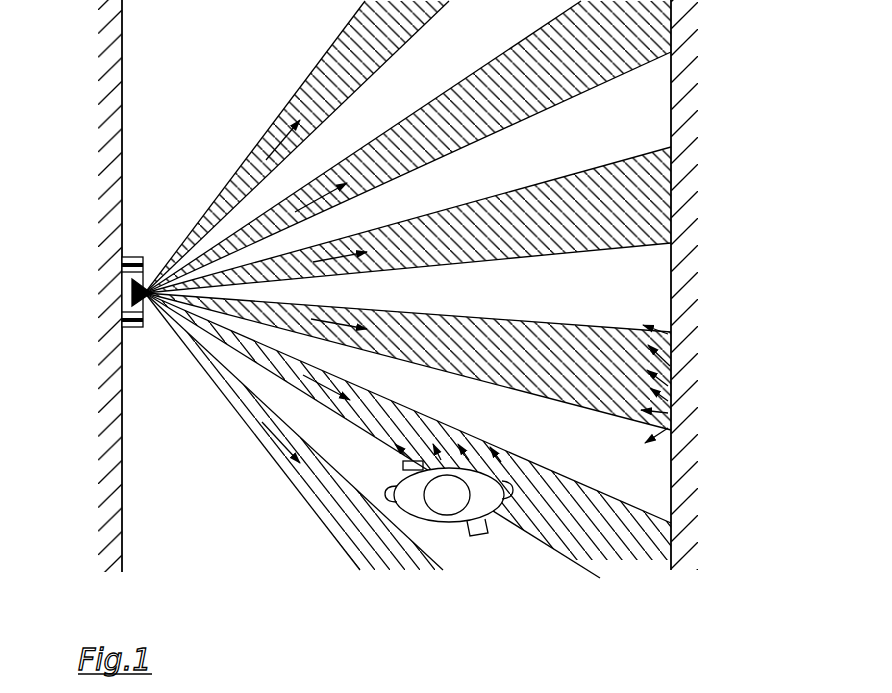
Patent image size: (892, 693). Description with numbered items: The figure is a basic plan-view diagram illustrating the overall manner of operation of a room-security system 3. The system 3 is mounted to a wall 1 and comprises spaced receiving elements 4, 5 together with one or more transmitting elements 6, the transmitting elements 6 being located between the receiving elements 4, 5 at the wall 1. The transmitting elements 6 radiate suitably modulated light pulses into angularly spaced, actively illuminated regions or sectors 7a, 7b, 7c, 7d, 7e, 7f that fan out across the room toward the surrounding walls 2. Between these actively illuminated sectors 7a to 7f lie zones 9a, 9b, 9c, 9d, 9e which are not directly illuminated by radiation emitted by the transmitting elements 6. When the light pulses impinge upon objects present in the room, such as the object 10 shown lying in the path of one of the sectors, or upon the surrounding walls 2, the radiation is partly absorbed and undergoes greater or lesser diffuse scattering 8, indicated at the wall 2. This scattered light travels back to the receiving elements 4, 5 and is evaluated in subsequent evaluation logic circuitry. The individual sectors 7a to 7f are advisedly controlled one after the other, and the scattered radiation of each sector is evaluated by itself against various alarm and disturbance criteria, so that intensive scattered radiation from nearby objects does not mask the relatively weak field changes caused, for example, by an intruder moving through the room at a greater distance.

The wall 1 is at (120, 483).
The surrounding walls 2 is at (682, 27).
The room-security system 3 is at (141, 256).
The receiving element 4 is at (140, 265).
The receiving element 5 is at (140, 320).
The transmitting element 6 is at (133, 294).
The actively illuminated sector 7a is at (360, 25).
The actively illuminated sector 7b is at (553, 28).
The actively illuminated sector 7c is at (663, 193).
The actively illuminated sector 7d is at (663, 383).
The actively illuminated sector 7e is at (408, 436).
The actively illuminated sector 7f is at (362, 556).
The diffuse scattering 8 is at (675, 343).
The non-illuminated zone 9a is at (363, 147).
The non-illuminated zone 9b is at (663, 98).
The non-illuminated zone 9c is at (663, 285).
The non-illuminated zone 9d is at (663, 477).
The non-illuminated zone 9e is at (408, 447).
The object in beam path 10 is at (493, 498).